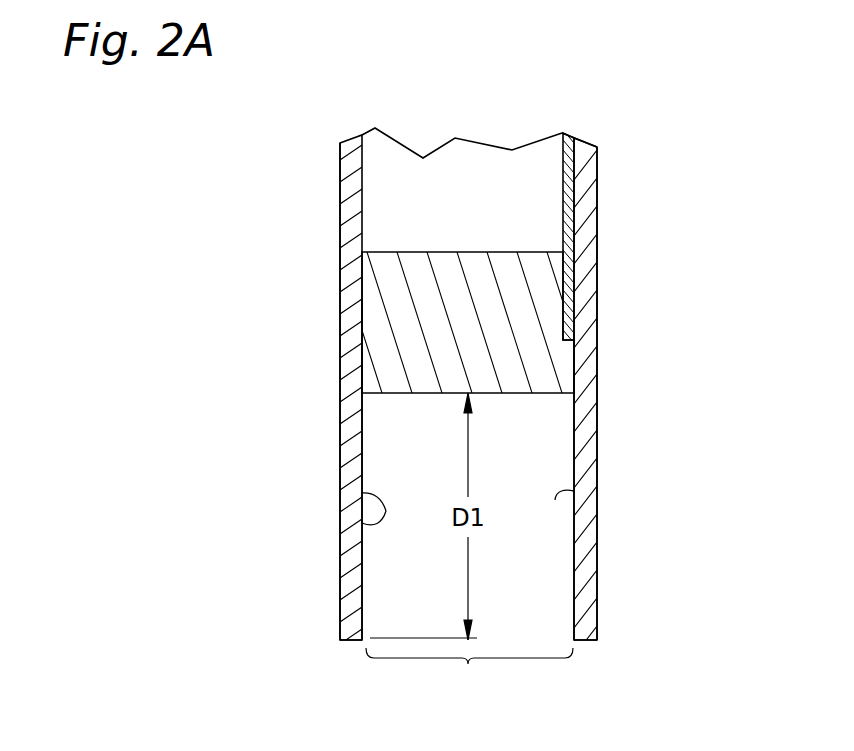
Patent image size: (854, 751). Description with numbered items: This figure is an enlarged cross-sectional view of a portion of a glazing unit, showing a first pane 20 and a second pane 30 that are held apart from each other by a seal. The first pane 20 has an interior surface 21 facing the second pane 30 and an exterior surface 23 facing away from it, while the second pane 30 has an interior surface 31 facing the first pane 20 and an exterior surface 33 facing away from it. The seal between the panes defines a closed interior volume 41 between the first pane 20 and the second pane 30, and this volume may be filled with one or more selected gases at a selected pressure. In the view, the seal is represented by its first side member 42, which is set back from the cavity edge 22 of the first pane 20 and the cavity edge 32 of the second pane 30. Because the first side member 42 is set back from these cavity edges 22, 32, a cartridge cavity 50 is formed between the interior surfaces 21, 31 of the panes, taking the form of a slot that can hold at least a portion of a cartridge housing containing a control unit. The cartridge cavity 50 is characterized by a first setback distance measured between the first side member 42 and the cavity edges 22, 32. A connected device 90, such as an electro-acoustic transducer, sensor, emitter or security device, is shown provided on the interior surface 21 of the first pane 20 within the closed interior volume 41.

The first pane 20 is at (590, 254).
The interior surface 21 is at (555, 500).
The cavity edge 22 is at (588, 650).
The exterior surface 23 is at (597, 205).
The second pane 30 is at (352, 423).
The interior surface 31 is at (362, 497).
The cavity edge 32 is at (346, 644).
The exterior surface 33 is at (340, 207).
The closed interior volume 41 is at (458, 190).
The first side member 42 is at (400, 308).
The cartridge cavity 50 is at (468, 664).
The connected device 90 is at (563, 168).